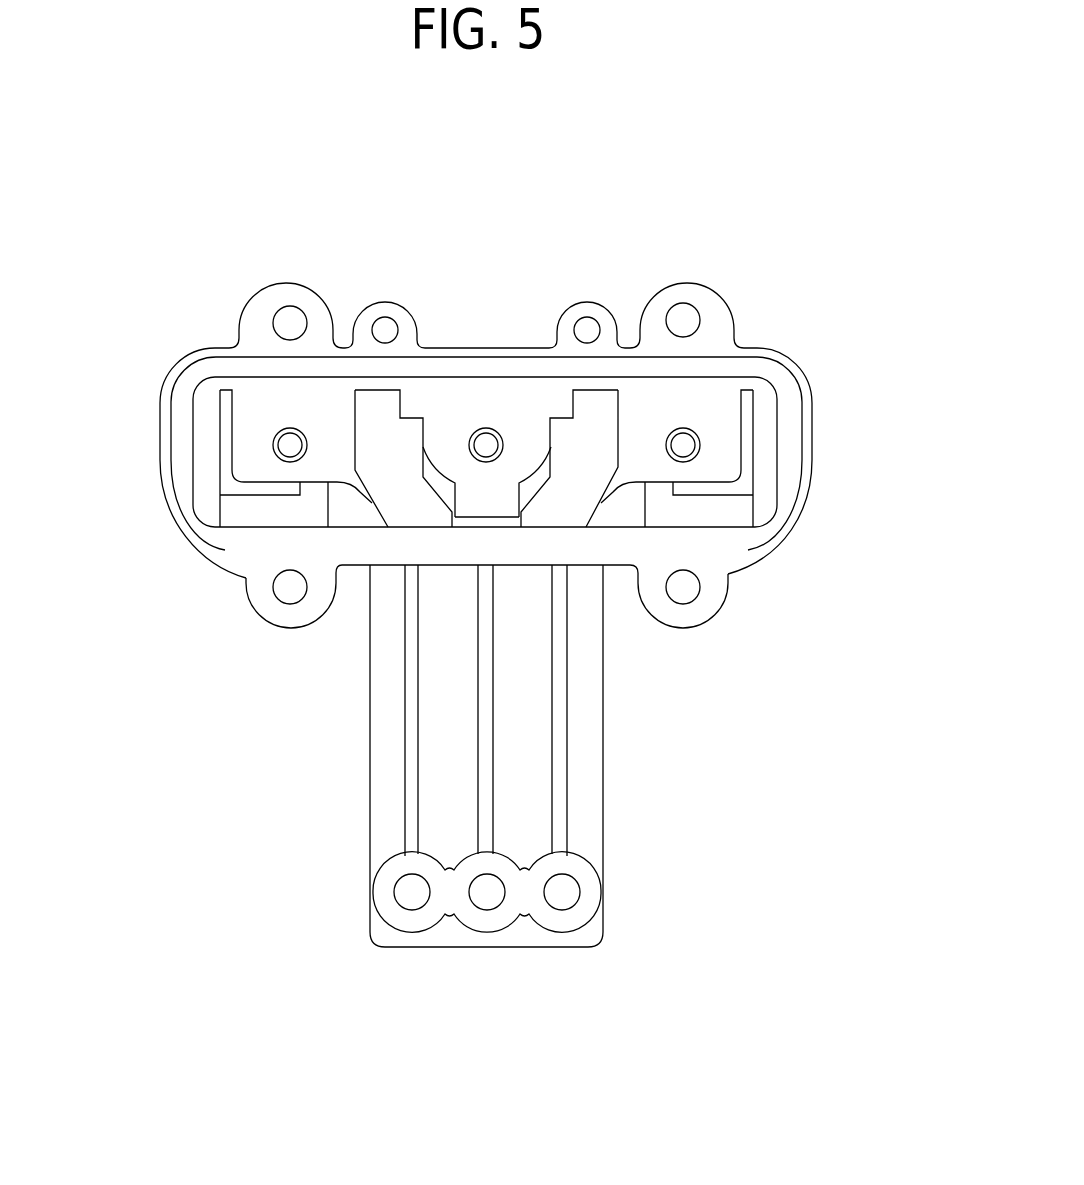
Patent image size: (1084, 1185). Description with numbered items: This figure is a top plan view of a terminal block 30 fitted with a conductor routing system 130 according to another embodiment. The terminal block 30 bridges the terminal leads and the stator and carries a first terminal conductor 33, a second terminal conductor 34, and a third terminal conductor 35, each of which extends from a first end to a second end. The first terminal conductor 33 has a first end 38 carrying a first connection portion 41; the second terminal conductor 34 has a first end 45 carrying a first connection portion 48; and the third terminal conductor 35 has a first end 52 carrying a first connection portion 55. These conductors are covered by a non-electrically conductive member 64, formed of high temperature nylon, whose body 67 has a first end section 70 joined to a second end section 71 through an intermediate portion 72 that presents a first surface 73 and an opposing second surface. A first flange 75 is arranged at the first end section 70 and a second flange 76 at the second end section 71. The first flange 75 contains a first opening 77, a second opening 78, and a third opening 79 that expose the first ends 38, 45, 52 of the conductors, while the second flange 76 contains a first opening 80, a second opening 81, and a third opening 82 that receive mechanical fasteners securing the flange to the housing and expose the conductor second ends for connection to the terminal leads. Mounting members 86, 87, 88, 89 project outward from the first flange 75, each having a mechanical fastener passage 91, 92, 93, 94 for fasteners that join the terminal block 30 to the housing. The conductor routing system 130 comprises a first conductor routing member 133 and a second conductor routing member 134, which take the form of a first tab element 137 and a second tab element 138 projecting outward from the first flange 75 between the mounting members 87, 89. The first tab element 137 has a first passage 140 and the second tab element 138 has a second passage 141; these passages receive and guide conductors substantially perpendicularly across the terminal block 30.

The terminal block 30 is at (166, 326).
The first terminal conductor 33 is at (342, 576).
The second terminal conductor 34 is at (481, 505).
The third terminal conductor 35 is at (608, 502).
The first end 38 is at (233, 395).
The first connection portion 41 is at (291, 428).
The first end 45 is at (538, 404).
The first connection portion 48 is at (486, 428).
The first end 52 is at (736, 390).
The first connection portion 55 is at (684, 428).
The non-electrically conductive member 64 is at (610, 819).
The body 67 is at (366, 797).
The first end section 70 is at (452, 366).
The second end section 71 is at (588, 843).
The intermediate portion 72 is at (510, 728).
The first surface 73 is at (447, 735).
The first flange 75 is at (803, 537).
The second flange 76 is at (365, 910).
The first opening 77 is at (226, 492).
The second opening 78 is at (442, 497).
The third opening 79 is at (744, 484).
The first opening 80 is at (412, 876).
The second opening 81 is at (492, 902).
The third opening 82 is at (560, 882).
The mounting member 86 is at (265, 622).
The mounting member 87 is at (262, 281).
The mounting member 88 is at (720, 606).
The mounting member 89 is at (722, 297).
The mechanical fastener passage 91 is at (295, 597).
The mechanical fastener passage 92 is at (288, 312).
The mechanical fastener passage 93 is at (672, 590).
The mechanical fastener passage 94 is at (684, 316).
The conductor routing system 130 is at (388, 262).
The first conductor routing member 133 is at (366, 298).
The second conductor routing member 134 is at (575, 272).
The first tab element 137 is at (400, 300).
The second tab element 138 is at (590, 292).
The first passage 140 is at (402, 325).
The second passage 141 is at (580, 322).